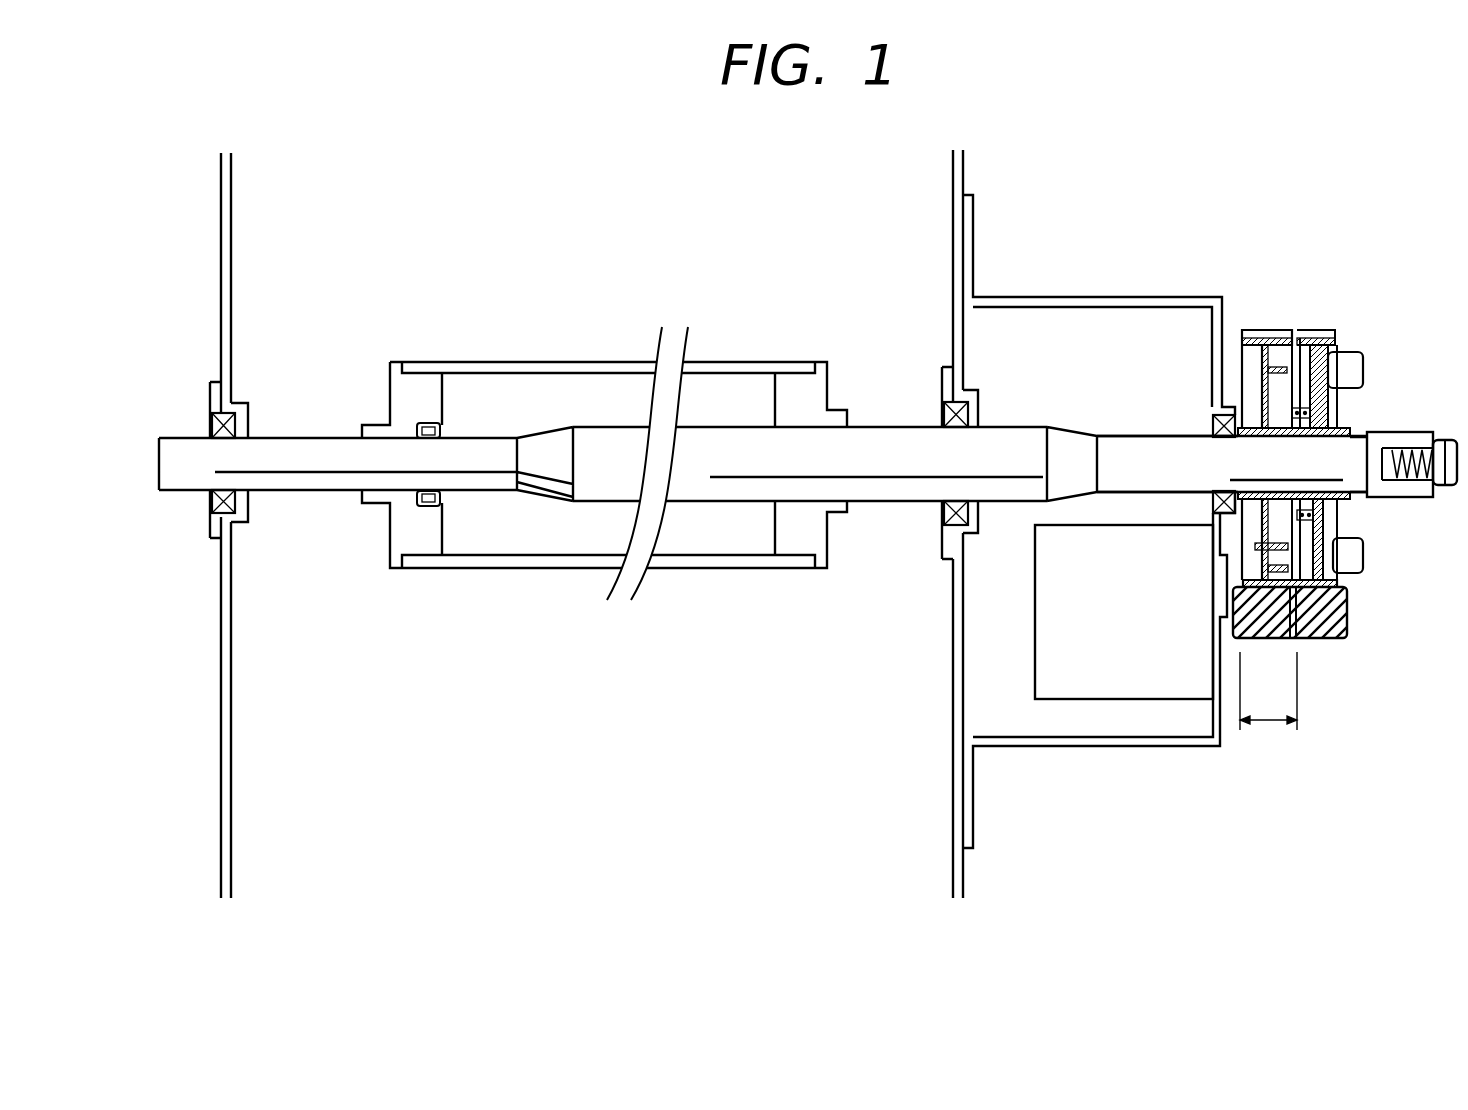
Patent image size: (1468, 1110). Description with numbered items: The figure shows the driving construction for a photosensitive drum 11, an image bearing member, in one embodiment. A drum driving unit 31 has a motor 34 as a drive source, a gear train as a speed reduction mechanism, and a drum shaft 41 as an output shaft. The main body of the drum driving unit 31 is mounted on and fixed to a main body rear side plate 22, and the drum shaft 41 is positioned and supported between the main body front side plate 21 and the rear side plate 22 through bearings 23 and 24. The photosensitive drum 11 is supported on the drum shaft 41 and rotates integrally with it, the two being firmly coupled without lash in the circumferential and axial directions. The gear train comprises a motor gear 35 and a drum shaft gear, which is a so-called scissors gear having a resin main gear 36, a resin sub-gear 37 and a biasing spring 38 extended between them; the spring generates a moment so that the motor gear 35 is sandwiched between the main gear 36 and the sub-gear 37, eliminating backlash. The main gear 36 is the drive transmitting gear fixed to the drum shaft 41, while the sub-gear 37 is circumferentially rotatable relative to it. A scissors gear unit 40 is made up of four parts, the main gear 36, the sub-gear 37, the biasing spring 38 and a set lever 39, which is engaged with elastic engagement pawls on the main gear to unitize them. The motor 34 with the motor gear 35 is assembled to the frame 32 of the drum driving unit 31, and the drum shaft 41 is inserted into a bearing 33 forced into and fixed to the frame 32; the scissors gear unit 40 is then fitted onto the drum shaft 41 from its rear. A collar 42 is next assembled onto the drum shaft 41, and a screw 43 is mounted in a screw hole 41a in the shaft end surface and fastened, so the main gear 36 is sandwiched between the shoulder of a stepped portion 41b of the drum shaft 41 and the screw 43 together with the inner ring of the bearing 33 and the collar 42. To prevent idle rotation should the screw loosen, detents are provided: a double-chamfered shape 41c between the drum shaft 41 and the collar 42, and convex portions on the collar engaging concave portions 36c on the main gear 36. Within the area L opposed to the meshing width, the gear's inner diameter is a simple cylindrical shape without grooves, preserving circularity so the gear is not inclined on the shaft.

The photosensitive drum 11 is at (688, 562).
The main body front side plate 21 is at (226, 246).
The main body rear side plate 22 is at (952, 232).
The bearing 23 is at (228, 510).
The bearing 24 is at (944, 530).
The drum driving unit 31 is at (1214, 473).
The frame 32 is at (1103, 296).
The bearing 33 is at (1213, 425).
The motor 34 is at (1148, 665).
The motor gear 35 is at (1345, 636).
The main gear 36 is at (1252, 330).
The concave portions 36c is at (1368, 430).
The sub-gear 37 is at (1317, 330).
The biasing spring 38 is at (1307, 330).
The set lever 39 is at (1362, 408).
The scissors gear unit 40 is at (1352, 395).
The drum shaft 41 is at (1023, 445).
The screw hole 41a is at (1423, 498).
The stepped portion 41b is at (1213, 455).
The double-chamfered shape 41c is at (1360, 436).
The collar 42 is at (1393, 497).
The screw 43 is at (1447, 487).